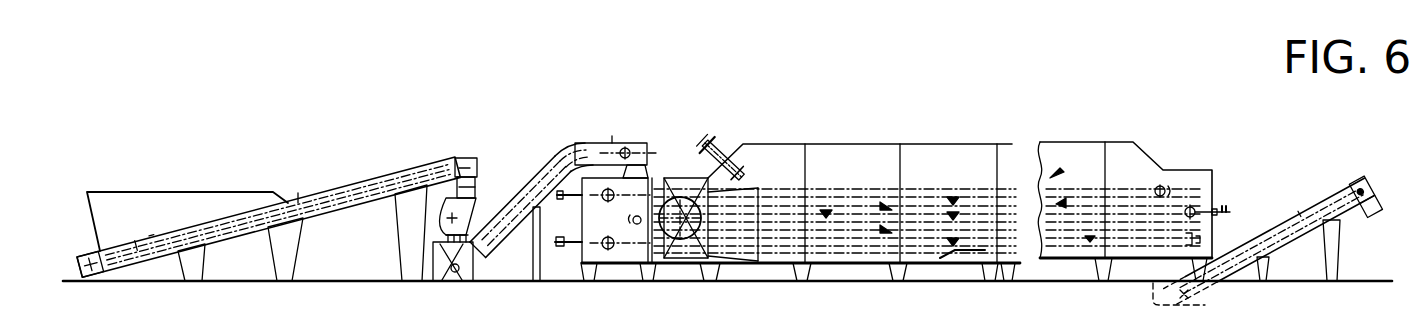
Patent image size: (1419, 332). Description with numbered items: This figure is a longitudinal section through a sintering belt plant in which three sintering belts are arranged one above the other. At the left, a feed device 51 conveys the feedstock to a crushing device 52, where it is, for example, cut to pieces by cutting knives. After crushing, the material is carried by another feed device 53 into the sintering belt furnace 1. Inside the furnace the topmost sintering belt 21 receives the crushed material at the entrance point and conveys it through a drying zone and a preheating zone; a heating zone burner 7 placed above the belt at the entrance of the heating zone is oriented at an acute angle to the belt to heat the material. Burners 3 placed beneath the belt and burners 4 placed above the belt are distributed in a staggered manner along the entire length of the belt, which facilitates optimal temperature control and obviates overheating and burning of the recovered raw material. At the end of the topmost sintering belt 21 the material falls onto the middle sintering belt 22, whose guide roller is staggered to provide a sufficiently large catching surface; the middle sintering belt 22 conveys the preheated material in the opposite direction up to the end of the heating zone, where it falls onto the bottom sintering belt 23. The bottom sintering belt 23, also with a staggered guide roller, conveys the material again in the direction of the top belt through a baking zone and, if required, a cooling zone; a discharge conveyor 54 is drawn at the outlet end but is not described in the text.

The sintering belt furnace 1 is at (853, 153).
The burners placed beneath sintering belt 3 is at (953, 193).
The burners placed above sintering belt 4 is at (1057, 174).
The heating zone burner 7 is at (722, 142).
The topmost sintering belt 21 is at (1146, 185).
The middle sintering belt 22 is at (1190, 211).
The bottom sintering belt 23 is at (1198, 241).
The feed device 51 is at (199, 204).
The crushing device 52 is at (476, 199).
The feed device 53 is at (575, 152).
The discharge conveyor 54 is at (1360, 190).